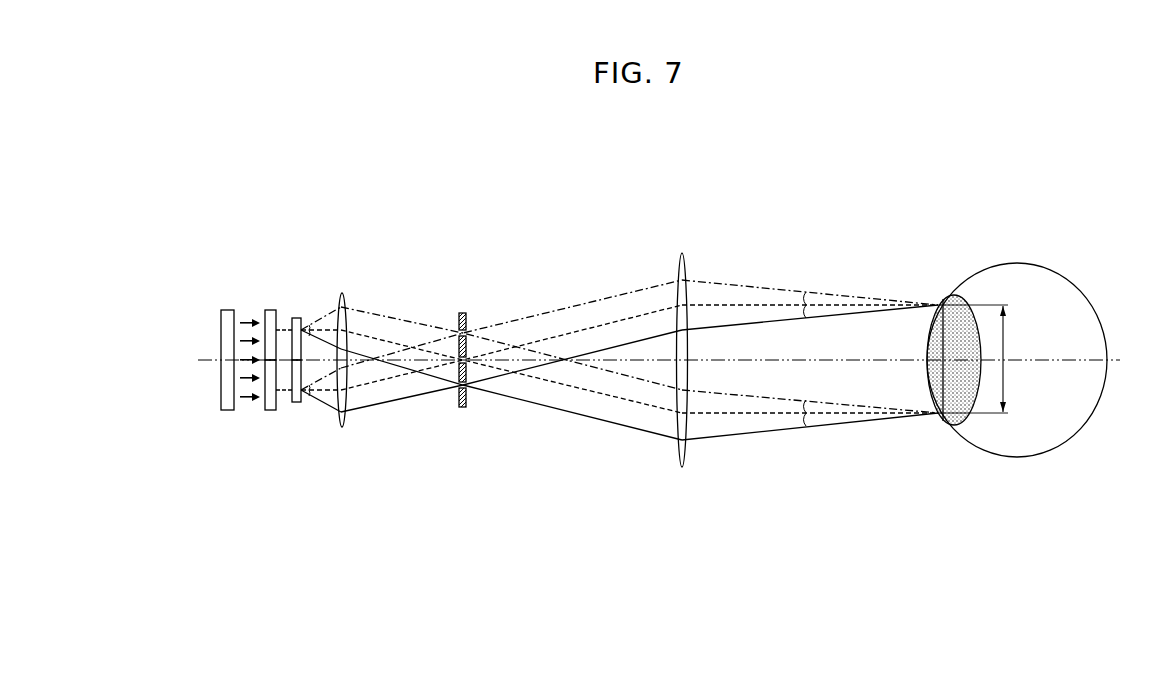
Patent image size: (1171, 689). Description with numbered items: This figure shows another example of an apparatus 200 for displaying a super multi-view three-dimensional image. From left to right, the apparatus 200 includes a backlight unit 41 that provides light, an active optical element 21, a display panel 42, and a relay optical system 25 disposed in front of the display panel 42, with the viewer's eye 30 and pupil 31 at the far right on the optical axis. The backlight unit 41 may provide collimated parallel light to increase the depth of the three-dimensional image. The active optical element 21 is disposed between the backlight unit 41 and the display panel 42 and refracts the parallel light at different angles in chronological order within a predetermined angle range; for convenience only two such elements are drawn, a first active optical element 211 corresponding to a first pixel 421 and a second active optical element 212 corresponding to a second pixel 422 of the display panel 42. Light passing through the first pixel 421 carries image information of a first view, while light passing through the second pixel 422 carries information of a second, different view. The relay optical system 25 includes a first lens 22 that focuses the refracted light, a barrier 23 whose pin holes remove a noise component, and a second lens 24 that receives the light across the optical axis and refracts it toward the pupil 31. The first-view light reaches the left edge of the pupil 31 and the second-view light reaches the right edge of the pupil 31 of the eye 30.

The apparatus 200 is at (234, 510).
The backlight unit 41 is at (228, 310).
The active optical element 21 is at (261, 335).
The first active optical element 211 is at (270, 328).
The second active optical element 212 is at (268, 398).
The display panel 42 is at (313, 335).
The first pixel 421 is at (303, 326).
The second pixel 422 is at (302, 400).
The relay optical system 25 is at (687, 196).
The first lens 22 is at (342, 293).
The barrier 23 is at (464, 313).
The second lens 24 is at (682, 253).
The eye 30 is at (1017, 341).
The pupil 31 is at (960, 297).